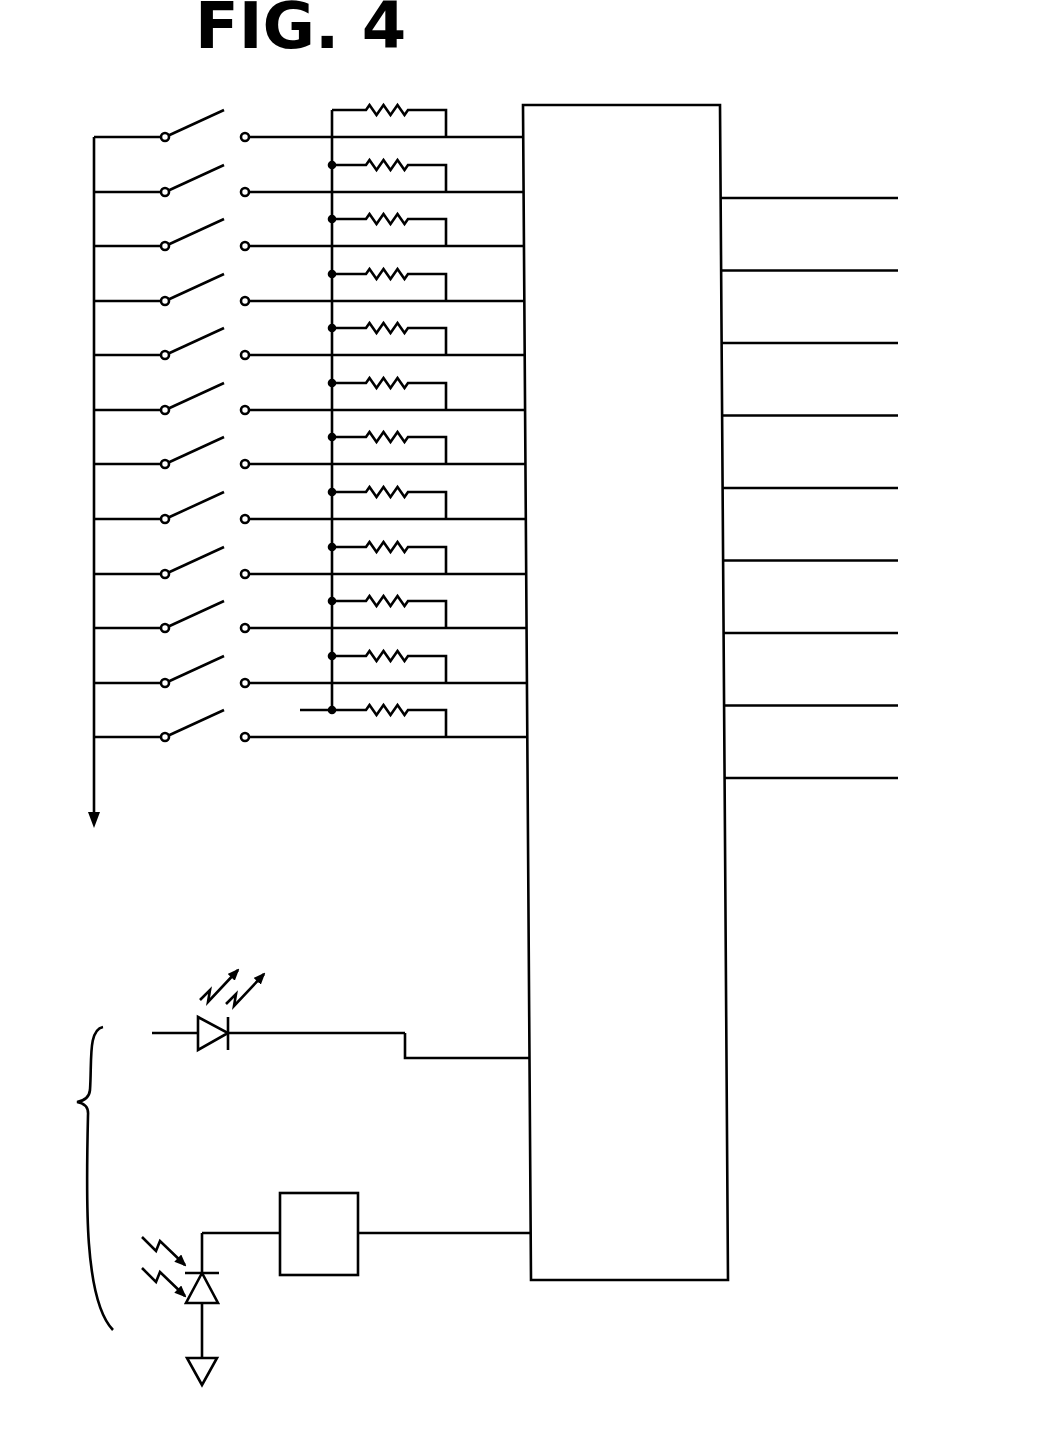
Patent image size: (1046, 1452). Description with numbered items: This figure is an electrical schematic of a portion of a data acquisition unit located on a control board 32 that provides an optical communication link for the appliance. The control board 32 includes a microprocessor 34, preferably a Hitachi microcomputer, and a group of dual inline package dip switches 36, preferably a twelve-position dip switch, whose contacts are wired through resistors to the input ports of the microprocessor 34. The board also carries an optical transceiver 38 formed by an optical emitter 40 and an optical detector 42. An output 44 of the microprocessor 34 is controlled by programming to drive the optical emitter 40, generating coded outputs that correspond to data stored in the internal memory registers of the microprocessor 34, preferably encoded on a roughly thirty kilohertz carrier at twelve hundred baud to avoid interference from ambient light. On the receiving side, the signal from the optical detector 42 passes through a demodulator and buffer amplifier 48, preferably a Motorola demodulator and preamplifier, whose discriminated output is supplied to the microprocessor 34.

The control board 32 is at (818, 955).
The microprocessor 34 is at (683, 930).
The group of dual inline package (dip) switches 36 is at (122, 118).
The optical transceiver 38 is at (76, 1178).
The optical emitter 40 is at (133, 1020).
The optical detector 42 is at (152, 1215).
The output of the microprocessor 44 is at (518, 1056).
The demodulator and buffer amplifier 48 is at (338, 1180).